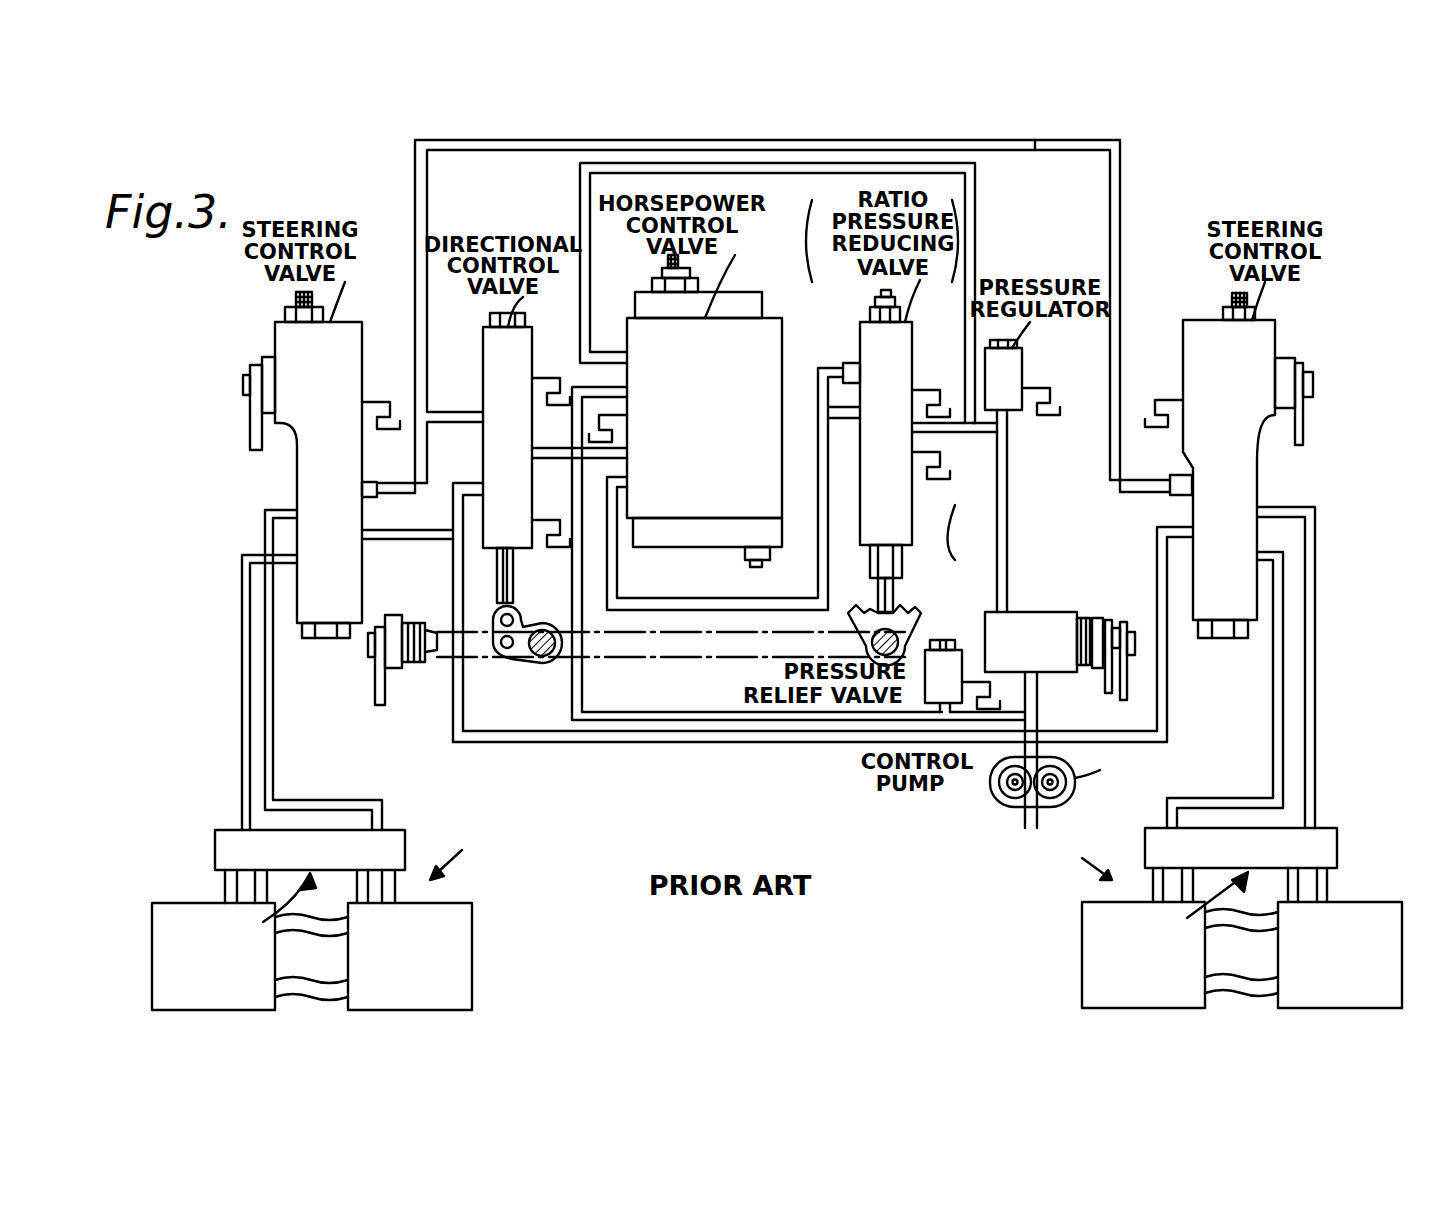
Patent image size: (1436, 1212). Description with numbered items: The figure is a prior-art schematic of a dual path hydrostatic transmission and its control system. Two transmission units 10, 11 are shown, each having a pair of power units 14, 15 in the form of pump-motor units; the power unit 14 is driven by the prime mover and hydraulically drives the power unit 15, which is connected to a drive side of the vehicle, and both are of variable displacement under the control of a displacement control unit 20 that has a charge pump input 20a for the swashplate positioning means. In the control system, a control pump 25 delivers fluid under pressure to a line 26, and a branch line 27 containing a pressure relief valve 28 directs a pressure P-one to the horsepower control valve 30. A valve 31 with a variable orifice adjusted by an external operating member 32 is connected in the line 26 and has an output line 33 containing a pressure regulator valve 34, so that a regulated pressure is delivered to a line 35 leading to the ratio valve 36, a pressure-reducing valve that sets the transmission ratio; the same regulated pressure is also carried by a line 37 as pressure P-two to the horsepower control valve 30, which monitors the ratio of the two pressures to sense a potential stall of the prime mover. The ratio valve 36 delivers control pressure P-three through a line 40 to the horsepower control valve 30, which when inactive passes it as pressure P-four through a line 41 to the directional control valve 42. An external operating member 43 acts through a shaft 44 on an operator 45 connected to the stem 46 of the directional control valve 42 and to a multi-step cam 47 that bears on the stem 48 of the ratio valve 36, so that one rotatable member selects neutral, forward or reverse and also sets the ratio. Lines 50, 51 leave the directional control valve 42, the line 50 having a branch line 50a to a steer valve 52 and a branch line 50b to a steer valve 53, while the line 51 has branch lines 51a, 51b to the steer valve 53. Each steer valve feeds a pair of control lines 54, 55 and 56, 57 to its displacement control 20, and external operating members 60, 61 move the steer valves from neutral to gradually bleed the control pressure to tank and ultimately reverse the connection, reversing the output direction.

The transmission unit 10 is at (462, 855).
The transmission unit 11 is at (1076, 861).
The power unit 14 is at (235, 985).
The power unit 15 is at (427, 983).
The displacement control unit 20 is at (402, 830).
The charge pump input 20a is at (726, 906).
The control pump 25 is at (1076, 778).
The line 26 is at (1032, 695).
The branch line 27 is at (667, 740).
The pressure relief valve 28 is at (965, 648).
The horsepower control valve 30 is at (725, 428).
The valve 31 is at (1038, 622).
The external operating member 32 is at (1128, 683).
The output line 33 is at (1000, 533).
The pressure regulator valve 34 is at (1005, 374).
The line 35 is at (983, 438).
The ratio valve 36 is at (900, 435).
The line 37 is at (965, 215).
The line 40 is at (825, 492).
The line 41 is at (552, 457).
The directional control valve 42 is at (522, 452).
The external operating member 43 is at (388, 695).
The shaft 44 is at (437, 622).
The operator 45 is at (540, 657).
The stem 46 is at (513, 578).
The multi-step cam 47 is at (904, 612).
The stem 48 is at (878, 594).
The line 50 is at (455, 413).
The branch line 50a is at (1025, 160).
The branch line 50b is at (420, 452).
The line 51 is at (462, 485).
The branch line 51a is at (655, 745).
The branch line 51b is at (392, 538).
The steer valve 52 is at (1255, 338).
The steer valve 53 is at (297, 343).
The control line 54 is at (1315, 690).
The control line 55 is at (1283, 692).
The control line 56 is at (273, 745).
The control line 57 is at (242, 740).
The external operating member 60 is at (1303, 433).
The external operating member 61 is at (262, 447).